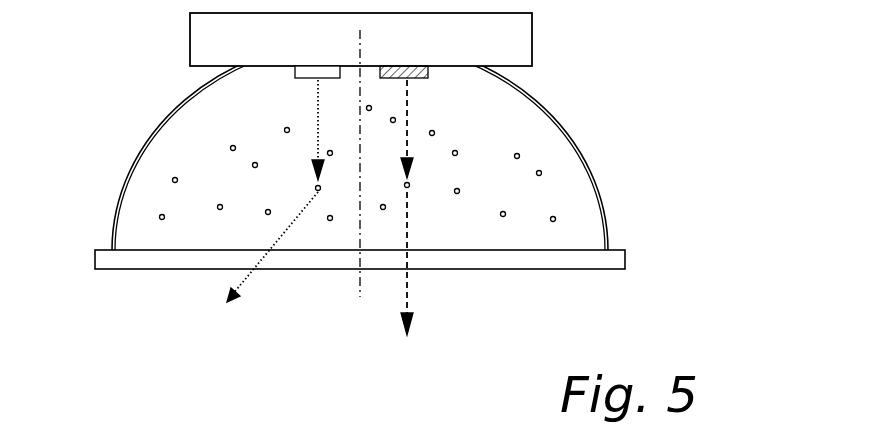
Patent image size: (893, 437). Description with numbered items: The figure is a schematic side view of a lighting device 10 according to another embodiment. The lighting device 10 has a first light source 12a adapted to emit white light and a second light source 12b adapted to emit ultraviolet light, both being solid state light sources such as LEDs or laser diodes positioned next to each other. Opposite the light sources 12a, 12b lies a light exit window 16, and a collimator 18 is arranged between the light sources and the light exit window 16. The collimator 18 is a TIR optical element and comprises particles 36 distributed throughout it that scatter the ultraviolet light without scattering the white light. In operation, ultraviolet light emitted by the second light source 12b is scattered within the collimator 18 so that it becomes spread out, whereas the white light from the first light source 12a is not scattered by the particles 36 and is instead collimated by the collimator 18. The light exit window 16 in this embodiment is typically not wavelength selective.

The lighting device 10 is at (672, 40).
The first light source 12a is at (428, 77).
The second light source 12b is at (294, 77).
The light exit window 16 is at (627, 260).
The collimator 18 is at (603, 208).
The particles 36 is at (174, 177).